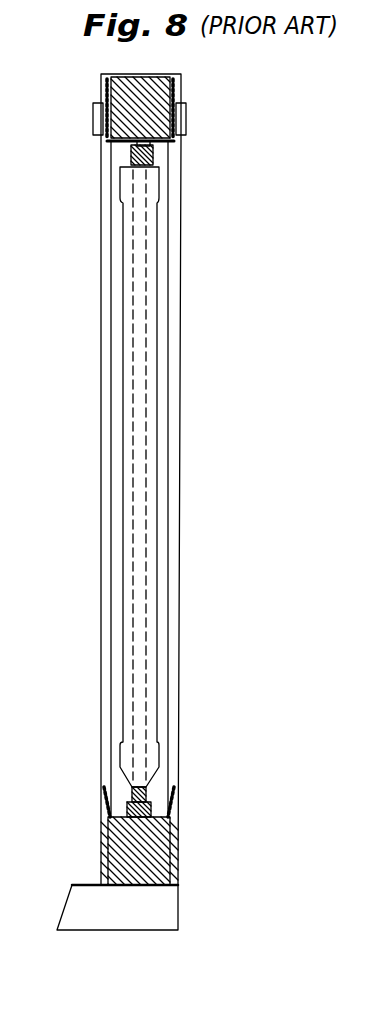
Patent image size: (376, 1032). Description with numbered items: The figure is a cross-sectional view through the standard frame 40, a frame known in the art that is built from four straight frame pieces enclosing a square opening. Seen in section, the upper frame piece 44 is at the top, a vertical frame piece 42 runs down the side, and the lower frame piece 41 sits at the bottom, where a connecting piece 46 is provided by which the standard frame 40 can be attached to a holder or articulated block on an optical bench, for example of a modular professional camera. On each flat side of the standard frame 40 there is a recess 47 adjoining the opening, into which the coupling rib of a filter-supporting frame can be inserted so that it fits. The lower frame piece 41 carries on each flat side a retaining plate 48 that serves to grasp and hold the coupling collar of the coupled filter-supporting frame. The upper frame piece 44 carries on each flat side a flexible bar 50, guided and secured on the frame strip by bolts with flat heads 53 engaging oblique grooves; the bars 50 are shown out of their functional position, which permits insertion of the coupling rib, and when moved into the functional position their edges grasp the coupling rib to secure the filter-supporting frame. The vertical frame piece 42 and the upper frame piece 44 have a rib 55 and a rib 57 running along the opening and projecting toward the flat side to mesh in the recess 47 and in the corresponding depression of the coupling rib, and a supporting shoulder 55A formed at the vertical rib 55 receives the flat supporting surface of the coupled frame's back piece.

The standard frame 40 is at (186, 267).
The lower frame piece 41 is at (162, 858).
The vertical frame piece 42 is at (180, 700).
The upper frame piece 44 is at (127, 82).
The connecting piece 46 is at (173, 908).
The recess 47 is at (112, 270).
The retaining plate 48 is at (102, 805).
The flexible bar 50 is at (104, 80).
The flat head 53 is at (93, 121).
The rib 55 is at (127, 363).
The supporting shoulder 55A is at (118, 190).
The rib 57 is at (128, 153).